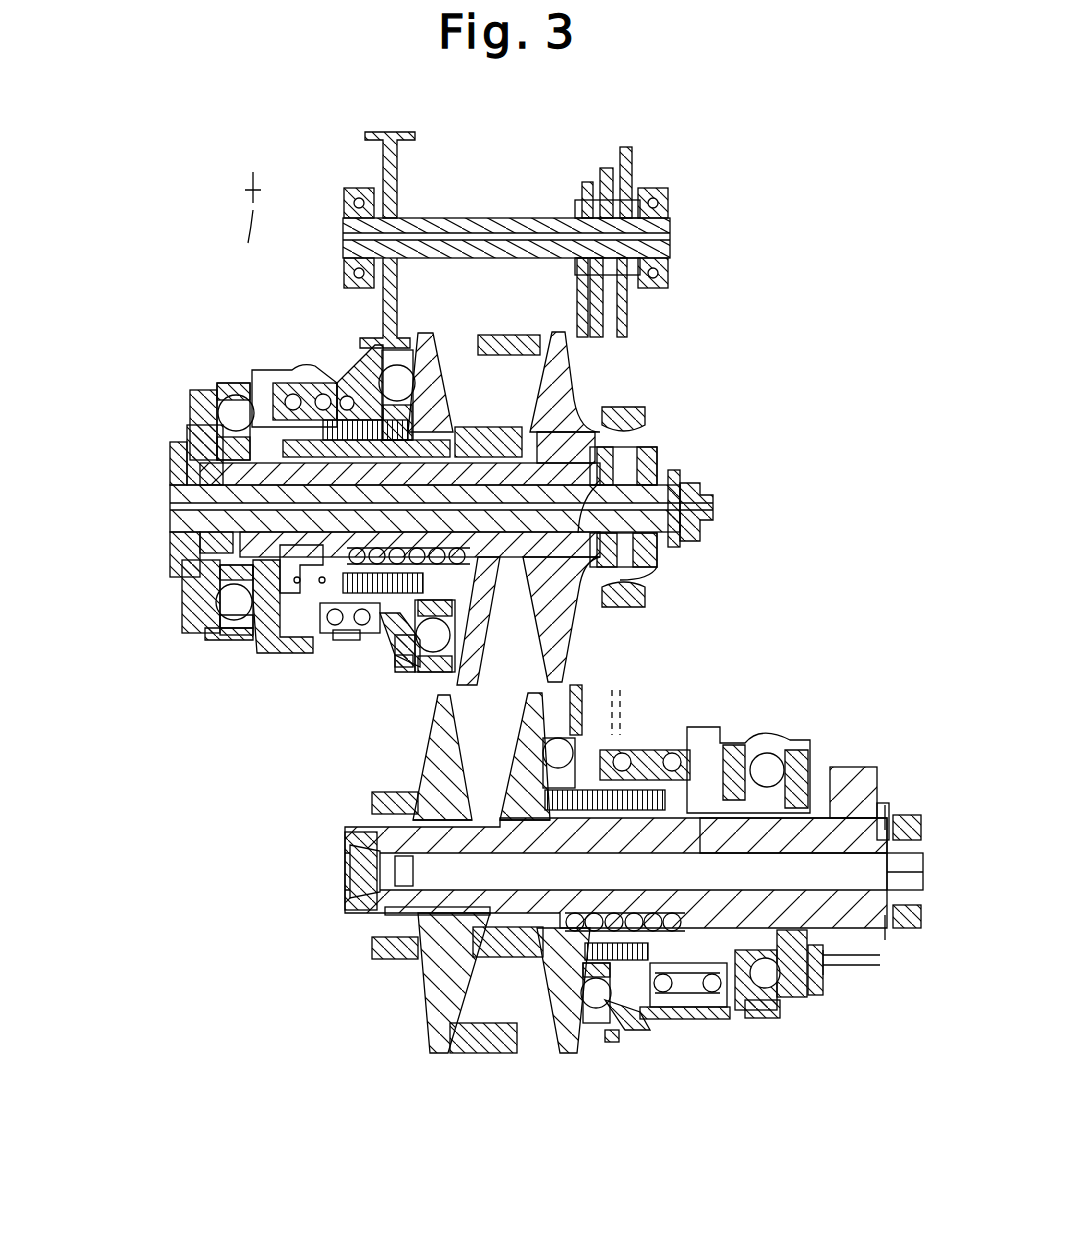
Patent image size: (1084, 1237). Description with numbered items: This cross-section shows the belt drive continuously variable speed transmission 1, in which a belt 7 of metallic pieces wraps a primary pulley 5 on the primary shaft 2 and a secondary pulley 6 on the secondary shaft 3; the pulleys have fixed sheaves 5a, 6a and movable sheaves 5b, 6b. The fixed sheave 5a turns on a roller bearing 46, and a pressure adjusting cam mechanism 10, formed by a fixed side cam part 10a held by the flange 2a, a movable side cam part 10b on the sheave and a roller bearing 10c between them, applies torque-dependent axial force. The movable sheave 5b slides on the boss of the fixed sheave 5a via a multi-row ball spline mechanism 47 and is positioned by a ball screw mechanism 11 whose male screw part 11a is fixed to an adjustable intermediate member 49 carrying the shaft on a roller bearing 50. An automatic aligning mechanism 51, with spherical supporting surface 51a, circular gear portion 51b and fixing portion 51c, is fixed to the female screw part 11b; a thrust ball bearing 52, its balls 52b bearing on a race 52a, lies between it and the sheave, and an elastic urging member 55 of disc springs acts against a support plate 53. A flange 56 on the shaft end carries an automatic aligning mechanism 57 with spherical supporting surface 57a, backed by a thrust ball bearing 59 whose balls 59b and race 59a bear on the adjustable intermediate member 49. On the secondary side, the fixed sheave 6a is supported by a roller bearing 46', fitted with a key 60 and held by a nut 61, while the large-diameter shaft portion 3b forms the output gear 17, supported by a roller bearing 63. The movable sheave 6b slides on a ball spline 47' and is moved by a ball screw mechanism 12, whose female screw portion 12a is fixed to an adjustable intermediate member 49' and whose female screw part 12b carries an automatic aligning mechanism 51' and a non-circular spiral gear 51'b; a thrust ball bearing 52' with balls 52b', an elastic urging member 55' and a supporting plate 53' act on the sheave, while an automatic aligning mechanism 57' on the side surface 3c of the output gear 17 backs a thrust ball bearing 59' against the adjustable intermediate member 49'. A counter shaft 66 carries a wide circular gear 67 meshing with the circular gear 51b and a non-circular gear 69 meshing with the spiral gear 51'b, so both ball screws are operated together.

The belt drive continuously variable speed transmission 1 is at (253, 207).
The primary shaft 2 is at (172, 490).
The flange 2a is at (713, 507).
The secondary shaft 3 is at (345, 838).
The large-diameter shaft portion 3b is at (798, 845).
The side surface 3c is at (852, 945).
The primary pulley 5 is at (585, 383).
The fixed sheave 5a is at (556, 332).
The movable sheave 5b is at (426, 333).
The secondary pulley 6 is at (407, 1005).
The fixed sheave 6a is at (428, 1040).
The movable sheave 6b is at (560, 1000).
The belt 7 is at (488, 1025).
The pressure adjusting cam mechanism 10 is at (669, 460).
The fixed side cam part 10a is at (680, 478).
The movable side cam part 10b is at (642, 428).
The roller bearing 10c is at (649, 452).
The ball screw mechanism 11 is at (340, 364).
The male screw part 11a is at (290, 398).
The female screw part 11b is at (305, 385).
The ball screw mechanism 12 is at (685, 1028).
The female screw portion 12a is at (752, 1012).
The female screw part 12b is at (690, 1020).
The output gear 17 is at (844, 800).
The roller bearing 46 is at (646, 484).
The roller bearing 46' is at (364, 900).
The multi-row ball spline mechanism 47 is at (435, 578).
The ball spline 47' is at (625, 895).
The adjustable intermediate member 49 is at (275, 625).
The adjustable intermediate member 49' is at (657, 1006).
The roller bearing 50 is at (195, 578).
The automatic aligning mechanism 51 is at (347, 657).
The spherical supporting surface 51a is at (357, 658).
The circular gear portion 51b is at (404, 668).
The fixing portion 51c is at (352, 648).
The automatic aligning mechanism 51' is at (634, 1033).
The non-circular spiral gear 51'b is at (614, 1063).
The thrust ball bearing 52 is at (454, 655).
The race 52a is at (425, 675).
The balls 52b is at (474, 636).
The bearing ball 52b' is at (546, 736).
The thrust ball bearing 52' is at (580, 1027).
The support plate 53 is at (306, 569).
The supporting plate 53' is at (748, 809).
The elastic urging member 55 is at (433, 604).
The elastic urging member 55' is at (617, 757).
The flange 56 is at (185, 460).
The automatic aligning mechanism 57 is at (207, 404).
The spherical supporting surface 57a is at (192, 626).
The automatic aligning mechanism 57' is at (836, 993).
The thrust ball bearing 59 is at (232, 649).
The race 59a is at (206, 640).
The balls 59b is at (222, 640).
The thrust ball bearing 59' is at (785, 1031).
The key 60 is at (450, 907).
The nut 61 is at (347, 930).
The roller bearing 63 is at (908, 815).
The counter shaft 66 is at (500, 225).
The wide circular gear 67 is at (396, 173).
The non-circular gear 69 is at (628, 172).